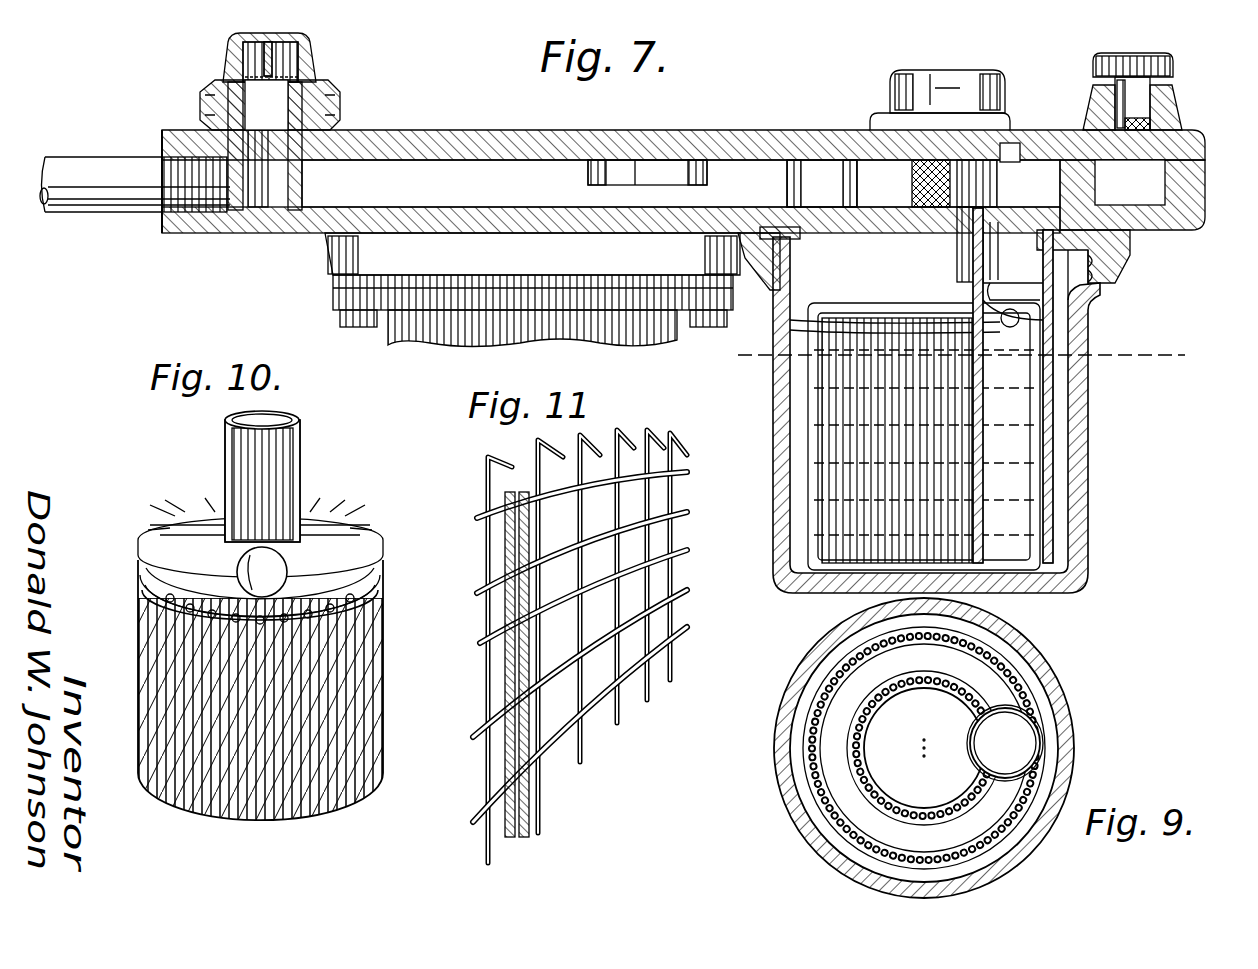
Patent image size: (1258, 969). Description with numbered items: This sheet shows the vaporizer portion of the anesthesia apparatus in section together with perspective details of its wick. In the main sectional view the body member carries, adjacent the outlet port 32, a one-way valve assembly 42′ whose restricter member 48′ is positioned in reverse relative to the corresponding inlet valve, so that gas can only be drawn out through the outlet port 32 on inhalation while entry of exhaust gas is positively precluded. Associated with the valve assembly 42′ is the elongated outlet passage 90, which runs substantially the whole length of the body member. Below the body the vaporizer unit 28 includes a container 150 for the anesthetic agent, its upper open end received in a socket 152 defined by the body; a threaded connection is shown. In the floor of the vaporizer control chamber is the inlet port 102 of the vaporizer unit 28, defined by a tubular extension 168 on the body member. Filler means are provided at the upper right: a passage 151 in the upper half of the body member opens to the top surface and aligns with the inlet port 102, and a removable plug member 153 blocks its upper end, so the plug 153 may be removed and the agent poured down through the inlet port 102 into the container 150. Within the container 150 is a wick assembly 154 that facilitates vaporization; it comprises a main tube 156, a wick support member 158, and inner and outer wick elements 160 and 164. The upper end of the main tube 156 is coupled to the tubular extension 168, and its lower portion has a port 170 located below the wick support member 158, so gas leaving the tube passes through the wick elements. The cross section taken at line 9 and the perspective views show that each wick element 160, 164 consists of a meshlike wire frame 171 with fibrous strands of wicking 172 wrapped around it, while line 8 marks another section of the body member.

In FIG. 7, the section line 8- 8 is at (767, 147).
In FIG. 7, the section line 9- 9 is at (752, 335).
In FIG. 7, the vaporizer unit 28 is at (1115, 448).
In FIG. 7, the outlet port 32 is at (168, 172).
In FIG. 7, the one-way valve assembly 42′ is at (210, 54).
In FIG. 7, the restricter member 48′ is at (312, 98).
In FIG. 7, the elongated outlet passage 90 is at (362, 168).
In FIG. 7, the inlet port 102 is at (1043, 219).
In FIG. 7, the container 150 is at (1082, 497).
In FIG. 9, the container 150 is at (1032, 646).
In FIG. 7, the filler passage 151 is at (1012, 150).
In FIG. 7, the socket 152 is at (1082, 268).
In FIG. 7, the removable plug member 153 is at (1135, 97).
In FIG. 7, the wick assembly 154 is at (795, 520).
In FIG. 11, the wick assembly 154 is at (695, 609).
In FIG. 7, the main tube 156 is at (1056, 332).
In FIG. 10, the main tube 156 is at (292, 448).
In FIG. 9, the main tube 156 is at (1032, 716).
In FIG. 10, the wick support member 158 is at (200, 503).
In FIG. 10, the inner wick element 160 is at (378, 611).
In FIG. 9, the inner wick element 160 is at (850, 797).
In FIG. 10, the outer wick element 164 is at (378, 580).
In FIG. 9, the outer wick element 164 is at (793, 738).
In FIG. 7, the tubular extension 168 is at (1022, 284).
In FIG. 7, the port 170 is at (984, 405).
In FIG. 10, the port 170 is at (265, 557).
In FIG. 9, the port 170 is at (978, 746).
In FIG. 11, the meshlike wire frame 171 is at (686, 510).
In FIG. 11, the fibrous strands of wicking 172 is at (503, 749).